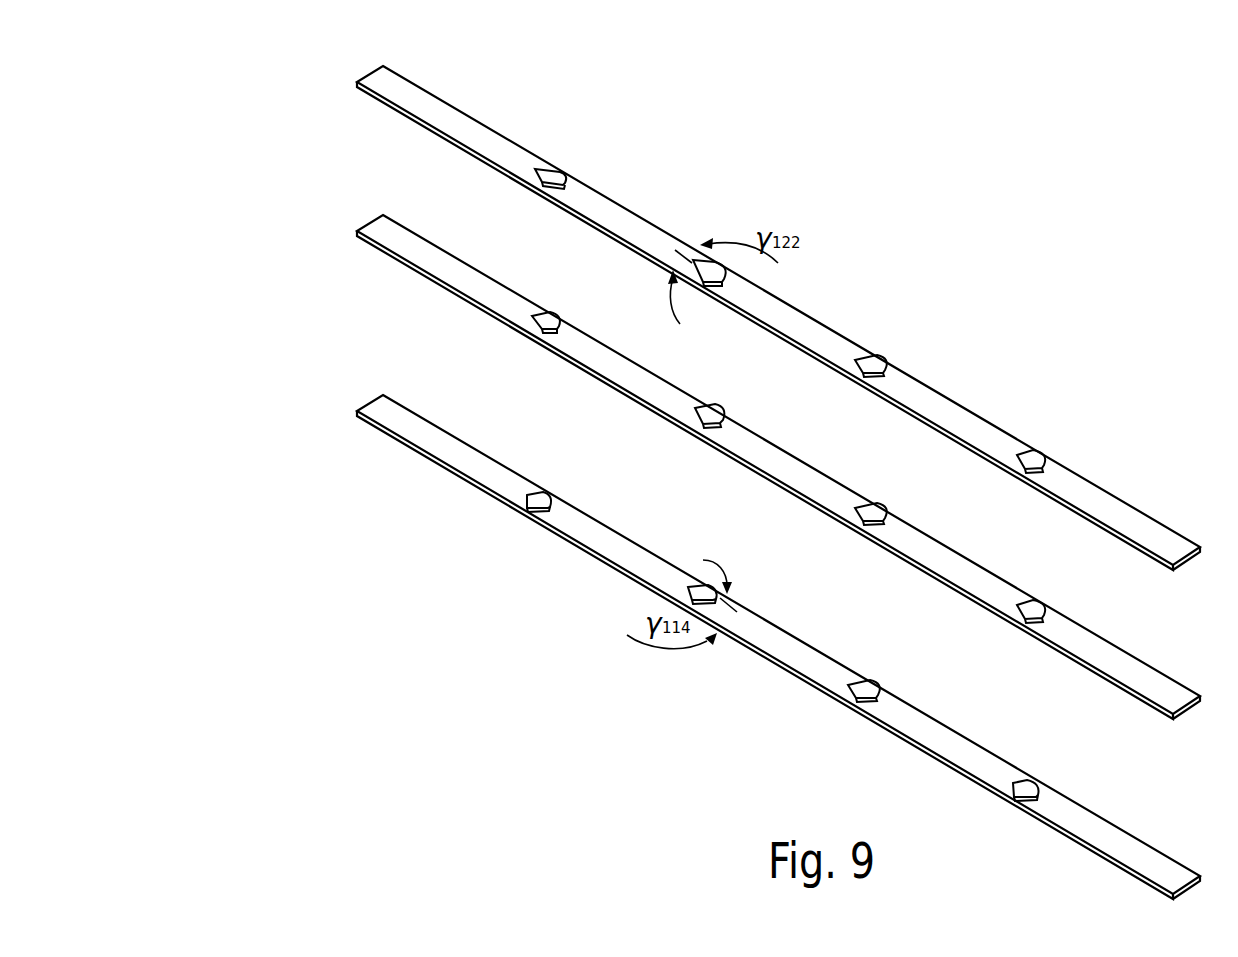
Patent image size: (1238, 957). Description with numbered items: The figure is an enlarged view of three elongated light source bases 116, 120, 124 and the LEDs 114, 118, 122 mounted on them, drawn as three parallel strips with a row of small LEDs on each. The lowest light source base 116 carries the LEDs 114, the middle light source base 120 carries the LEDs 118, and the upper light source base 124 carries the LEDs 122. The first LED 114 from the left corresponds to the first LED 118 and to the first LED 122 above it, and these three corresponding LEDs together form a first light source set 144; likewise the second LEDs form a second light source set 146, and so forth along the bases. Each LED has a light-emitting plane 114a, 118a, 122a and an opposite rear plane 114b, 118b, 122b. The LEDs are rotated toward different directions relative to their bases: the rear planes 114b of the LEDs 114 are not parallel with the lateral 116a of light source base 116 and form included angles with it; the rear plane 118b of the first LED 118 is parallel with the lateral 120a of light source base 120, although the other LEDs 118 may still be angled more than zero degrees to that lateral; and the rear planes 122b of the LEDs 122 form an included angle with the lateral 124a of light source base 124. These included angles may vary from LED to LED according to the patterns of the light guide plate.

The first light source set 144 is at (574, 117).
The second light source set 146 is at (753, 207).
The LED 122 is at (567, 146).
The light-emitting plane 122a is at (562, 172).
The rear plane 122b is at (541, 186).
The LED 118 is at (561, 308).
The light-emitting plane 118a is at (560, 318).
The rear plane 118b is at (540, 335).
The LED 114 is at (554, 487).
The light-emitting plane 114a is at (544, 492).
The rear plane 114b is at (537, 516).
The light source base 124 is at (1103, 512).
The lateral 124a is at (1107, 527).
The light source base 120 is at (1103, 662).
The lateral 120a is at (1107, 677).
The light source base 116 is at (1101, 842).
The lateral 116a is at (1105, 856).